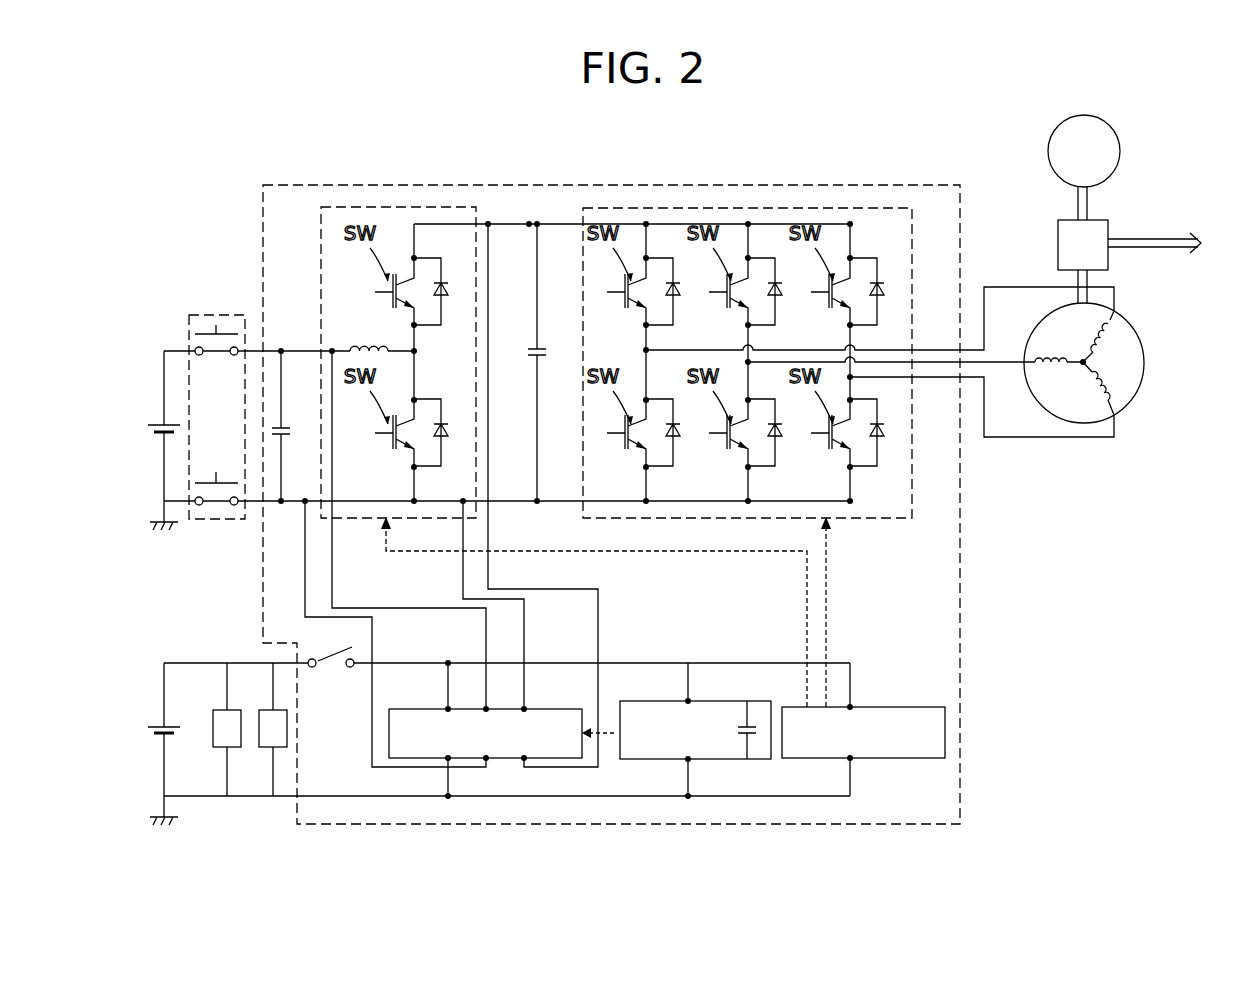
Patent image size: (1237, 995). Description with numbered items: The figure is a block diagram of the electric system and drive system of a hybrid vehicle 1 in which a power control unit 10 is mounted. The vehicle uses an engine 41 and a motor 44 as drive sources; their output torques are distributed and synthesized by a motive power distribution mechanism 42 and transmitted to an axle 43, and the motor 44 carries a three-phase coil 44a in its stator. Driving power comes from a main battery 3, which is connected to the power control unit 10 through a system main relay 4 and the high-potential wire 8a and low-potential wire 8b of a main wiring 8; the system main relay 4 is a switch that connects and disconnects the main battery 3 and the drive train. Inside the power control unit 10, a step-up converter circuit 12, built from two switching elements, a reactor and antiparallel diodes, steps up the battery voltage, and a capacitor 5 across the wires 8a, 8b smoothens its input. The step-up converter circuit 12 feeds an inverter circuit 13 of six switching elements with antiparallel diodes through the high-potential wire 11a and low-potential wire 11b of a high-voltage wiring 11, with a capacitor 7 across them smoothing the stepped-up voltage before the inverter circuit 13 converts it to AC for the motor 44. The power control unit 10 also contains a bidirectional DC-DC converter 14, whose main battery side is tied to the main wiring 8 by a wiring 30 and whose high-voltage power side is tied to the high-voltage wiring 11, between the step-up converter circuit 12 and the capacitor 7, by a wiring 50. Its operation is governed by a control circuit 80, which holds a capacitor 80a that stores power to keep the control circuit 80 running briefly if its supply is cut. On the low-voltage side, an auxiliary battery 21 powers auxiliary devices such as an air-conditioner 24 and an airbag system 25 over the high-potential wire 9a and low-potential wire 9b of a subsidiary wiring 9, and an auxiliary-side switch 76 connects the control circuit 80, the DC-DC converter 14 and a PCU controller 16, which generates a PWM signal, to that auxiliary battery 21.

The hybrid vehicle 1 is at (256, 180).
The main battery 3 is at (162, 425).
The system main relay 4 is at (207, 314).
The capacitor 5 is at (283, 425).
The capacitor 7 is at (540, 348).
The main wiring 8 is at (318, 287).
The high-potential wire 8a is at (291, 350).
The low-potential wire 8b is at (295, 500).
The subsidiary wiring 9 is at (215, 598).
The high-potential wire 9a is at (183, 660).
The low-potential wire 9b is at (183, 793).
The power control unit 10 is at (852, 185).
The high-voltage wiring 11 is at (462, 132).
The high-potential wire 11a is at (508, 501).
The low-potential wire 11b is at (529, 224).
The step-up converter circuit 12 is at (411, 205).
The inverter circuit 13 is at (752, 207).
The DC-DC converter 14 is at (560, 708).
The PCU controller 16 is at (922, 705).
The auxiliary battery 21 is at (164, 722).
The air-conditioner 24 is at (230, 708).
The airbag system 25 is at (273, 750).
The wiring 30 is at (375, 636).
The engine 41 is at (1121, 151).
The motive power distribution mechanism 42 is at (1110, 223).
The axle 43 is at (1175, 236).
The motor 44 is at (1136, 322).
The three-phase coil 44a is at (1108, 386).
The wiring 50 is at (464, 528).
The auxiliary-side switch 76 is at (333, 650).
The control circuit 80 is at (702, 700).
The capacitor 80a is at (758, 700).